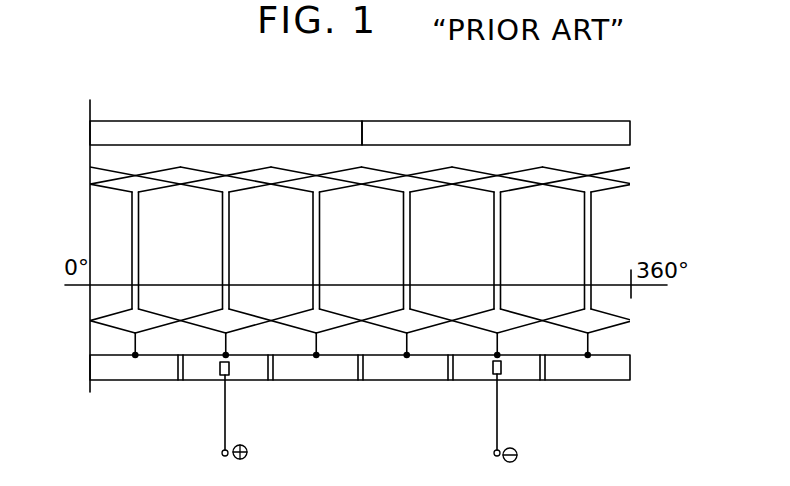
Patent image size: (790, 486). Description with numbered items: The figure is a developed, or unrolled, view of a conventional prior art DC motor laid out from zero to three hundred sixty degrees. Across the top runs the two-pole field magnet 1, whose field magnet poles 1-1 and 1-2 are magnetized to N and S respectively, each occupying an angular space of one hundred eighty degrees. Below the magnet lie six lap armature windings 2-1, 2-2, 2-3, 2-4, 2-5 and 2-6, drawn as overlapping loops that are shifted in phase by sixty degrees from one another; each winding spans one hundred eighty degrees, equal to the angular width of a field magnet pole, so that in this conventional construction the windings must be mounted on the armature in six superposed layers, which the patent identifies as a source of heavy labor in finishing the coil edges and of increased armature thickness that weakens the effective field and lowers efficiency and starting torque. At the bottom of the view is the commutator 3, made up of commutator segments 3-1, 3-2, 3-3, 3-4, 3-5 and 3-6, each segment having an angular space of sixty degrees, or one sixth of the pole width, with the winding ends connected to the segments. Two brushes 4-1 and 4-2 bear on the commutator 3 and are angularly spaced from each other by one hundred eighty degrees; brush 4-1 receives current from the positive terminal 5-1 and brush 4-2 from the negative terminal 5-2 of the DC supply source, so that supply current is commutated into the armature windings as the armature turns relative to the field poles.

The field magnet 1 is at (223, 88).
The field magnet pole 1-1 is at (232, 122).
The field magnet pole 1-2 is at (472, 121).
The armature winding 2-1 is at (107, 171).
The armature winding 2-2 is at (198, 171).
The armature winding 2-3 is at (288, 170).
The armature winding 2-4 is at (380, 170).
The armature winding 2-5 is at (467, 170).
The armature winding 2-6 is at (555, 170).
The commutator 3 is at (632, 370).
The commutator segment 3-1 is at (133, 380).
The commutator segment 3-2 is at (196, 380).
The commutator segment 3-3 is at (306, 380).
The commutator segment 3-4 is at (396, 379).
The commutator segment 3-5 is at (471, 377).
The commutator segment 3-6 is at (588, 379).
The brush 4-1 is at (228, 368).
The brush 4-2 is at (500, 368).
The positive terminal 5-1 is at (221, 456).
The negative terminal 5-2 is at (497, 457).